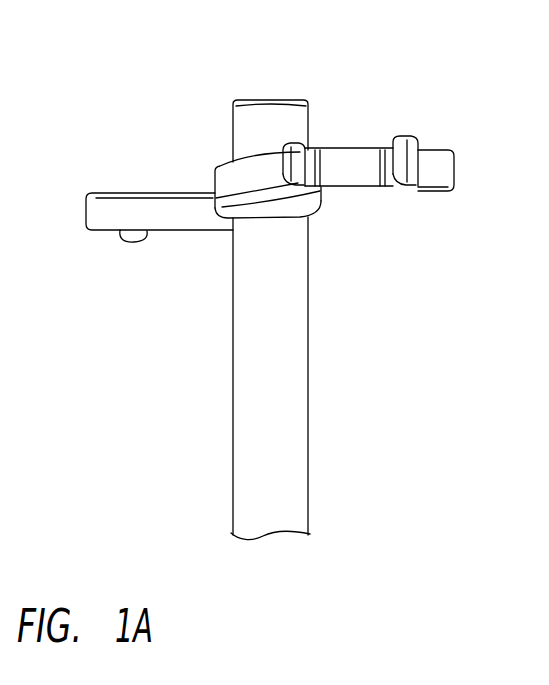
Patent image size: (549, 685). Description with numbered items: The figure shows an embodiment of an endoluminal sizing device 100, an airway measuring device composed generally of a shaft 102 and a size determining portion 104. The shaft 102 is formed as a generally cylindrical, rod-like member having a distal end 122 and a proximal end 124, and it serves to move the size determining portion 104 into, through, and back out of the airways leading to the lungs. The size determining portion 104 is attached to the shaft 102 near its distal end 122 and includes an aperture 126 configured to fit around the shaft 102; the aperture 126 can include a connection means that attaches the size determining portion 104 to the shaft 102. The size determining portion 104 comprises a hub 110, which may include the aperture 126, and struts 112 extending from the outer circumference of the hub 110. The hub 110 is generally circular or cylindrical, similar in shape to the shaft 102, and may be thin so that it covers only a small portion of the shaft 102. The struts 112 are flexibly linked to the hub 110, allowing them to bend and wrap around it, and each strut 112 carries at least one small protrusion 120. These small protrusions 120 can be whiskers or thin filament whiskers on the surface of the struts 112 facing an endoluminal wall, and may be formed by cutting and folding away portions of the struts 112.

The endoluminal sizing device 100 is at (97, 128).
The shaft 102 is at (290, 390).
The size determining portion 104 is at (363, 137).
The hub 110 is at (238, 167).
The struts 112 is at (167, 217).
The small protrusion 120 is at (305, 148).
The distal end 122 is at (267, 77).
The proximal end 124 is at (268, 591).
The aperture 126 is at (270, 211).